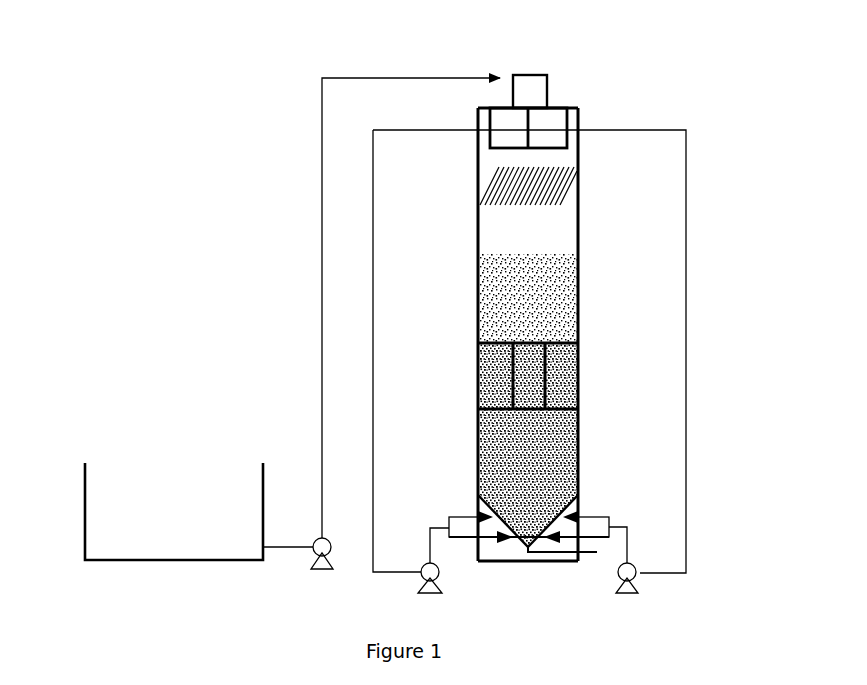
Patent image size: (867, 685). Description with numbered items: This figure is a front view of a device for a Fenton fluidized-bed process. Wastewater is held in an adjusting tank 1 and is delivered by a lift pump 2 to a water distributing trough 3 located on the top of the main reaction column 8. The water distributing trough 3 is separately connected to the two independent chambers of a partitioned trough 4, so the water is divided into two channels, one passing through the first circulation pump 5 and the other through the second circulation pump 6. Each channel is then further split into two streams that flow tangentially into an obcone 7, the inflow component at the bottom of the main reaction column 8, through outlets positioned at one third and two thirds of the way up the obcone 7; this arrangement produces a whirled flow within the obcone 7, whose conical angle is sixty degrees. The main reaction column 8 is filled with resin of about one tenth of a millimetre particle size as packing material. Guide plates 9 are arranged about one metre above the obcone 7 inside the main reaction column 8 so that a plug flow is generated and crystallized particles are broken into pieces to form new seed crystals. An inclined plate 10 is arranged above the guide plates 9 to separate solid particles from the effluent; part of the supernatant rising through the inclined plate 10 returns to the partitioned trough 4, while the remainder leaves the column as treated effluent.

The adjusting tank 1 is at (150, 560).
The lift pump 2 is at (316, 540).
The water distributing trough 3 is at (535, 90).
The partitioned trough 4 is at (557, 115).
The first circulation pump 5 is at (424, 565).
The second circulation pump 6 is at (633, 567).
The obcone 7 is at (580, 510).
The main reaction column 8 is at (572, 233).
The guide plates 9 is at (580, 344).
The inclined plate 10 is at (563, 173).